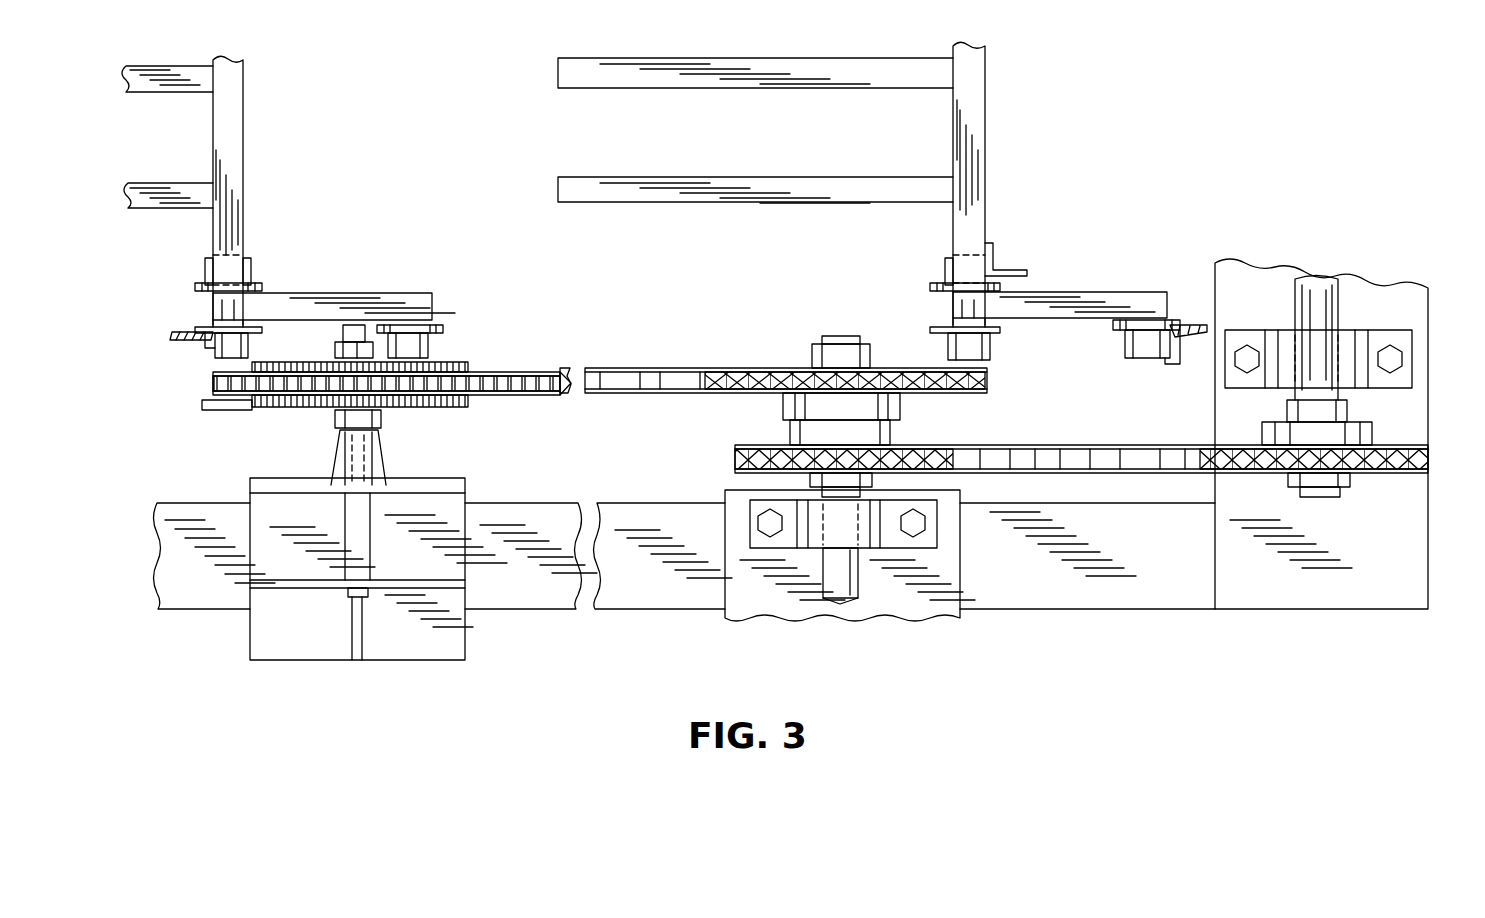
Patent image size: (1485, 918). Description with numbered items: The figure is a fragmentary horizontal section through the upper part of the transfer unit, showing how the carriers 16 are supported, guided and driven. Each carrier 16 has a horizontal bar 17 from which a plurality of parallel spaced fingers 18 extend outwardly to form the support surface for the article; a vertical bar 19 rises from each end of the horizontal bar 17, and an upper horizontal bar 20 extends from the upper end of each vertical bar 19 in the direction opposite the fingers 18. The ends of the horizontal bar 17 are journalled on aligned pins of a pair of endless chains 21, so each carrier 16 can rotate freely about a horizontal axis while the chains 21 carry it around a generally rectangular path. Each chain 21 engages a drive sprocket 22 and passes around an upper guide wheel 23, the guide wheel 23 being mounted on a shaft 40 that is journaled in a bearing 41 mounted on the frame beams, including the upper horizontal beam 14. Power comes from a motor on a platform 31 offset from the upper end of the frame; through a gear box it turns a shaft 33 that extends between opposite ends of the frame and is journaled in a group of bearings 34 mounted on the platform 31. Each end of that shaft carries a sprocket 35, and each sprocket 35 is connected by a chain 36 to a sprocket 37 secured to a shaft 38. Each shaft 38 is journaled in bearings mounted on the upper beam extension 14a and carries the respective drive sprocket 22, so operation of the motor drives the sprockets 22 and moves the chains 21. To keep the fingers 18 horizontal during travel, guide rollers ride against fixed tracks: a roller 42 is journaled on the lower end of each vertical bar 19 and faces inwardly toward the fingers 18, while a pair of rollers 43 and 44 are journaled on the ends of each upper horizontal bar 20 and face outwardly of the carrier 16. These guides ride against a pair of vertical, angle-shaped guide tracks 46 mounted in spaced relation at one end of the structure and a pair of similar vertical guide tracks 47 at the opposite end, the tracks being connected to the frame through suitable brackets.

The upper horizontal beam 14 is at (532, 604).
The upper beam extension 14a is at (955, 620).
The carrier 16 is at (247, 177).
The horizontal bar 17 is at (233, 114).
The fingers 18 is at (160, 188).
The vertical bar 19 is at (217, 307).
The upper horizontal bar 20 is at (357, 296).
The chain 21 is at (667, 368).
The drive sprocket 22 is at (807, 367).
The upper guide wheel 23 is at (470, 364).
The platform 31 is at (1415, 527).
The shaft 33 is at (1337, 283).
The bearings 34 is at (1372, 428).
The sprocket 35 is at (1283, 473).
The chain 36 is at (1162, 418).
The sprocket 37 is at (895, 445).
The shaft 38 is at (863, 592).
The shaft 40 is at (367, 453).
The bearing 41 is at (447, 503).
The roller 42 is at (251, 268).
The roller 43 is at (225, 352).
The roller 44 is at (447, 338).
The guide track 46 is at (996, 255).
The guide track 47 is at (167, 336).